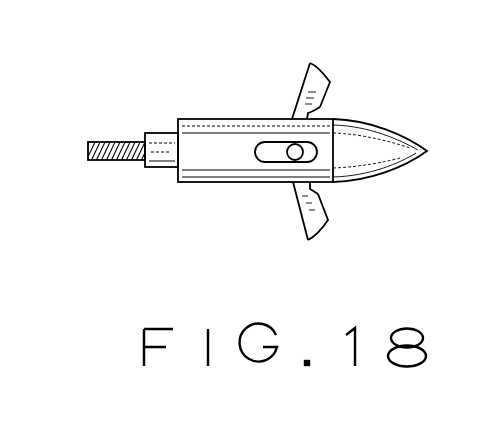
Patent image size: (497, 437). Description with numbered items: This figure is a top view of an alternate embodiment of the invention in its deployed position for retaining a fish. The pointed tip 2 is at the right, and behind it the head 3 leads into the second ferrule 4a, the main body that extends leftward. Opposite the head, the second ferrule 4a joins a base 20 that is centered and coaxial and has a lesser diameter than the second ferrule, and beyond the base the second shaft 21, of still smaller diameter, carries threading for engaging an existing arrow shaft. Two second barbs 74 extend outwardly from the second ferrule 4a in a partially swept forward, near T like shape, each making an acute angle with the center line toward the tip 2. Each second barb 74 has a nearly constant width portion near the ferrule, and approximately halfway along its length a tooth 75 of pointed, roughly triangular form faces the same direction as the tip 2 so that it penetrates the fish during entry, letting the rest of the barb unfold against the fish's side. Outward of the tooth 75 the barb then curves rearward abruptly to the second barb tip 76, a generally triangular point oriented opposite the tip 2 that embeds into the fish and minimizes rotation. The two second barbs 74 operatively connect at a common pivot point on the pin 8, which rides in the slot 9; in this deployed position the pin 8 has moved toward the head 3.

The tip 2 is at (443, 176).
The head 3 is at (397, 144).
The second ferrule 4a is at (243, 170).
The pin 8 is at (295, 143).
The slot 9 is at (259, 146).
The base 20 is at (152, 168).
The second shaft 21 is at (103, 142).
The second barb 74 is at (330, 82).
The tooth 75 is at (322, 107).
The second barb tip 76 is at (310, 63).